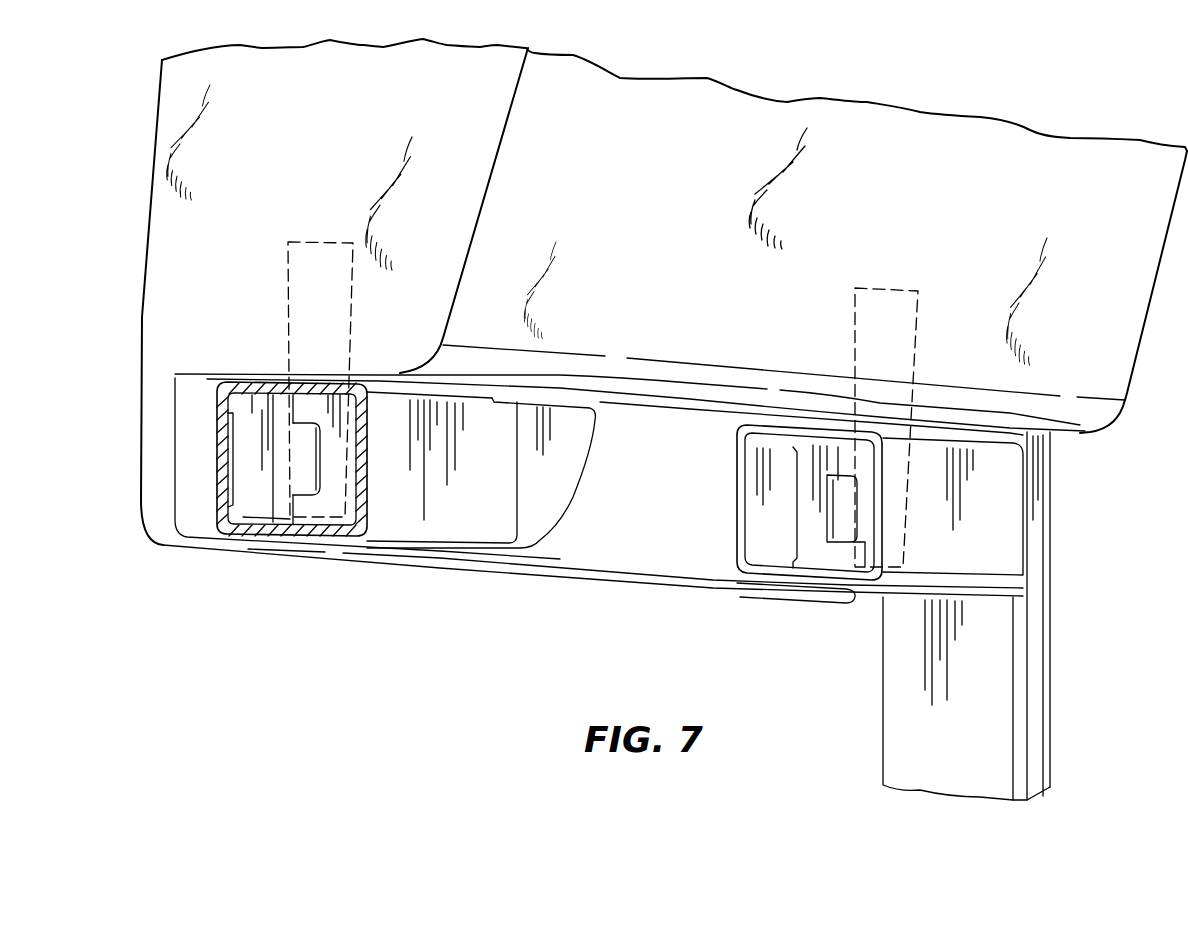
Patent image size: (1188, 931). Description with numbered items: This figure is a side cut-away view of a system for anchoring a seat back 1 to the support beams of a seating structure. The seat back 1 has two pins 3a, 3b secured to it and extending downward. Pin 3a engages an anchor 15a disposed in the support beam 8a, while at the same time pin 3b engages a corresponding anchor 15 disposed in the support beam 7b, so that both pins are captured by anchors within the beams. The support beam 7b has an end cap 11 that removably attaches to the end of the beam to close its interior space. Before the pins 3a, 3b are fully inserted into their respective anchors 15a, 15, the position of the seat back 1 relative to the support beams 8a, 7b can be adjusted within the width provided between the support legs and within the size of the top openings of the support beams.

The seat back 1 is at (847, 180).
The pin 3a is at (288, 318).
The pin 3b is at (916, 350).
The support beam 7b is at (970, 534).
The support beam 8a is at (388, 524).
The end cap 11 is at (548, 503).
The anchor 15 is at (807, 528).
The anchor 15a is at (247, 473).